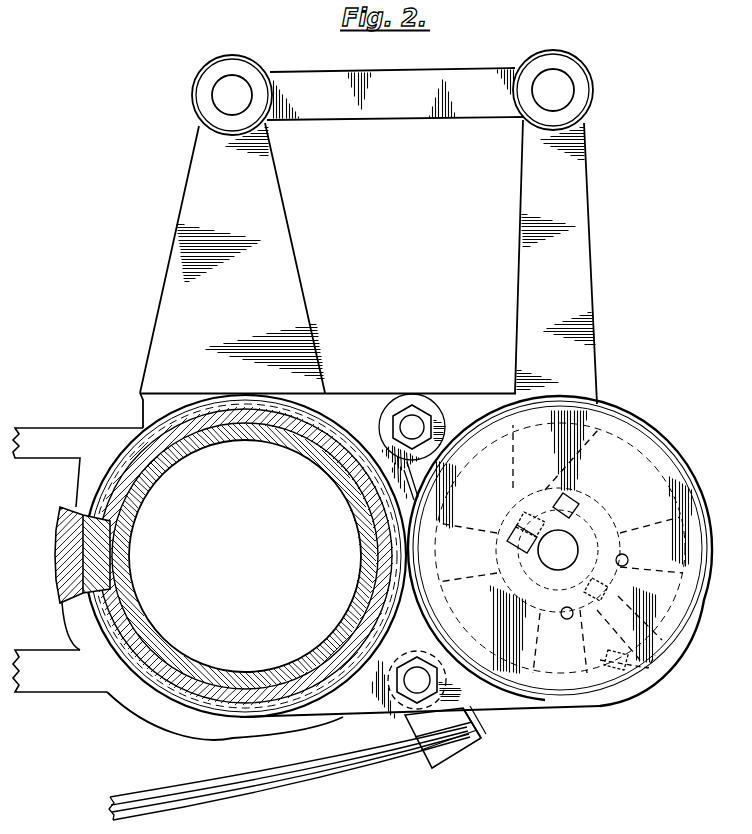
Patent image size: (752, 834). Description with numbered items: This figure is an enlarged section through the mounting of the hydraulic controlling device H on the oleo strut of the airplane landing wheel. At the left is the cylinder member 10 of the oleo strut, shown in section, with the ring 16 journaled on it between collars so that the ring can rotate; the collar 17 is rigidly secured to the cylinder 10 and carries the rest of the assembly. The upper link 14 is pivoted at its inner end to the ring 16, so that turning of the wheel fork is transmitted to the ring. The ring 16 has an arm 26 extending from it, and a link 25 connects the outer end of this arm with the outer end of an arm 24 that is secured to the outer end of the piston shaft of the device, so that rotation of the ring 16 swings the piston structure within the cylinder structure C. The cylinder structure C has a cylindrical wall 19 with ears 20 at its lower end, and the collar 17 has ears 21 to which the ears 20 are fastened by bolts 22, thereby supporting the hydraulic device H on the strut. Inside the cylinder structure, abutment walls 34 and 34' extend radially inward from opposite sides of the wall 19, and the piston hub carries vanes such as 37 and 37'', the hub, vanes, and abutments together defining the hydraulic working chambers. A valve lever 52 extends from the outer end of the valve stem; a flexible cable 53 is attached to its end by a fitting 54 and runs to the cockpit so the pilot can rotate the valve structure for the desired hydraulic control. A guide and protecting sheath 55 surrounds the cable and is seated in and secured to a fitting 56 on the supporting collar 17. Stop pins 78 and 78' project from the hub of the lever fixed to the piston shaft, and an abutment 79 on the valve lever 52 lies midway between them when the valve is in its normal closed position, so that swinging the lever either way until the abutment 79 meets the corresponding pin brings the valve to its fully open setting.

The cylinder member 10 is at (140, 466).
The upper link 14 is at (35, 440).
The ring 16 is at (68, 557).
The collar 17 is at (126, 460).
The cylindrical wall 19 is at (693, 608).
The ears 20 is at (463, 400).
The ears 21 is at (348, 402).
The bolts 22 is at (411, 415).
The arm 24 is at (570, 253).
The link 25 is at (430, 80).
The arm 26 is at (203, 168).
The abutment wall 34 is at (606, 515).
The abutment wall 34' is at (498, 528).
The vane 37 is at (560, 503).
The spoke 37'' is at (585, 634).
The valve lever 52 is at (630, 608).
The flexible cable 53 is at (490, 716).
The fitting 54 is at (648, 669).
The guide and protecting sheath 55 is at (282, 784).
The fitting 56 is at (451, 764).
The stop pin 78 is at (610, 544).
The stop pin 78' is at (550, 600).
The abutment 79 is at (604, 628).
The cylinder structure C is at (703, 556).
The hydraulic controlling device H is at (632, 403).